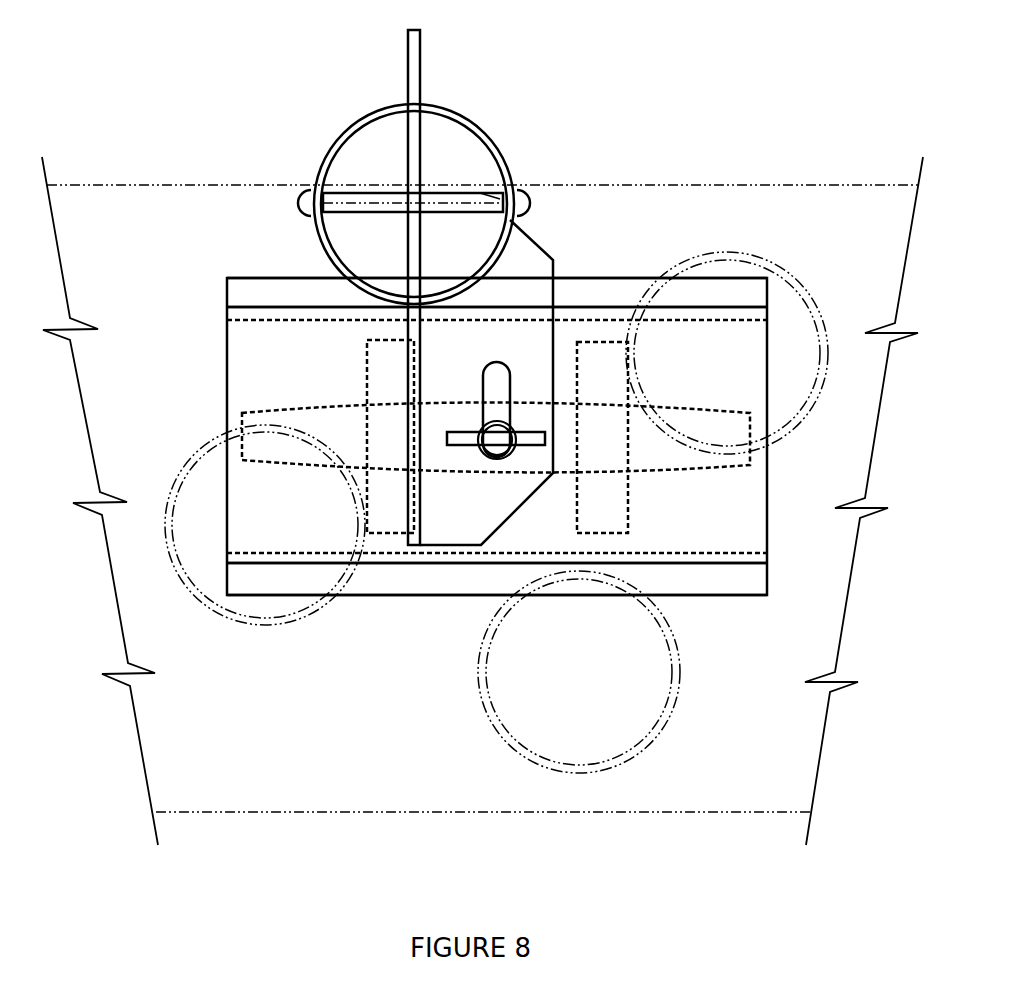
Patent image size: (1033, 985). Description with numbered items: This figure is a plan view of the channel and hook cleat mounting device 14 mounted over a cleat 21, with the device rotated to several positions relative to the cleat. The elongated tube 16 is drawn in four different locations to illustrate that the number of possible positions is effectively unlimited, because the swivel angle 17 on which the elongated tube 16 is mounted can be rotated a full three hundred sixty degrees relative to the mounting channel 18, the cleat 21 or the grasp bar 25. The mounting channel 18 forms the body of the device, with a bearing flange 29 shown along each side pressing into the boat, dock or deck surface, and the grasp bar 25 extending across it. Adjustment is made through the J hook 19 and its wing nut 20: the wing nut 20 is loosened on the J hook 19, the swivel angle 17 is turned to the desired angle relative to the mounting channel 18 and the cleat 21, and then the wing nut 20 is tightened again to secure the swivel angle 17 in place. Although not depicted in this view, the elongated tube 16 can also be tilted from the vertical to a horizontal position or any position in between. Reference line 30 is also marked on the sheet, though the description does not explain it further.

The channel and hook cleat mounting device 14 is at (588, 280).
The elongated tube 16 is at (463, 112).
The swivel angle 17 is at (408, 357).
The mounting channel 18 is at (255, 307).
The J hook 19 is at (495, 458).
The wing nut 20 is at (520, 447).
The cleat 21 is at (675, 470).
The grasp bar 25 is at (483, 378).
The bearing flange 29 is at (277, 278).
The reference line 30 is at (182, 185).